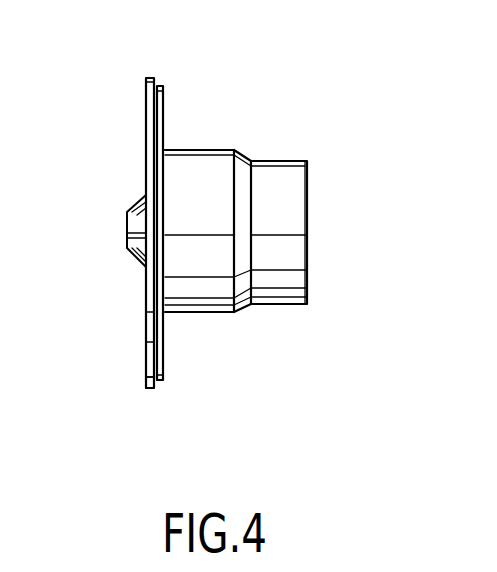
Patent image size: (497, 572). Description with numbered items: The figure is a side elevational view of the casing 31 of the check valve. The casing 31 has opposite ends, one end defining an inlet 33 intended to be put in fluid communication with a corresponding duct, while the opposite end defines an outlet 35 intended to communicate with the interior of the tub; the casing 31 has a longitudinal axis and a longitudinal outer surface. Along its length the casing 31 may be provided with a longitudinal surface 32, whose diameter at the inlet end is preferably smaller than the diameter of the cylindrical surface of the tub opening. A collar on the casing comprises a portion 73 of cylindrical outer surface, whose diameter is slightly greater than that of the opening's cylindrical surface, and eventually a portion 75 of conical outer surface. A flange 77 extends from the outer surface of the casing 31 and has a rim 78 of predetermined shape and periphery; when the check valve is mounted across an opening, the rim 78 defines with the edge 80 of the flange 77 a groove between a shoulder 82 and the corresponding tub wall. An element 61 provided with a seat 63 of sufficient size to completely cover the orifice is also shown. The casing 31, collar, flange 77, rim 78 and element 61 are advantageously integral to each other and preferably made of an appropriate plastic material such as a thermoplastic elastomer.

The casing 31 is at (210, 257).
The longitudinal surface 32 is at (287, 158).
The inlet 33 is at (308, 273).
The outlet 35 is at (143, 323).
The element 61 is at (127, 233).
The seat 63 is at (141, 200).
The portion of cylindrical outer surface 73 is at (201, 149).
The portion of conical outer surface 75 is at (246, 153).
The flange 77 is at (164, 350).
The rim 78 is at (145, 355).
The edge 80 is at (163, 381).
The shoulder 82 is at (152, 388).